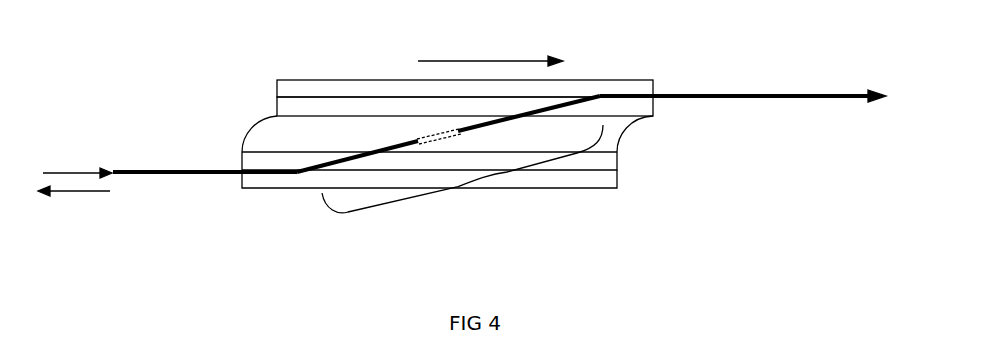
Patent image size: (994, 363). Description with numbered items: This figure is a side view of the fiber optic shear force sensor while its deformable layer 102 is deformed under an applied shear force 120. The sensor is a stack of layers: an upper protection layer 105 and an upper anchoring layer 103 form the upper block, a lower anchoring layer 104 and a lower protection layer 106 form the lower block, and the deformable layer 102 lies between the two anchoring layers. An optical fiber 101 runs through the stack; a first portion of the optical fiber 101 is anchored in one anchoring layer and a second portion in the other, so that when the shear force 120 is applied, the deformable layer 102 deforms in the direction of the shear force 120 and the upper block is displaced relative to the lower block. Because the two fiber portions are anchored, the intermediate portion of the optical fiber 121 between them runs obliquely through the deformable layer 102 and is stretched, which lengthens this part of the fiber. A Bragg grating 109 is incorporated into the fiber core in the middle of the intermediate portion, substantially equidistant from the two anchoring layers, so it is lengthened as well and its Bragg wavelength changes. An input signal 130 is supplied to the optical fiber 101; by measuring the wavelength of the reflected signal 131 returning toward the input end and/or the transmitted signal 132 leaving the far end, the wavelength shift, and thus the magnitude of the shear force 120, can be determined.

The optical fiber 101 is at (177, 173).
The deformable layer 102 is at (623, 137).
The upper anchoring layer 103 is at (276, 107).
The lower anchoring layer 104 is at (617, 163).
The upper protection layer 105 is at (276, 90).
The lower protection layer 106 is at (593, 190).
The Bragg grating 109 is at (430, 129).
The shear force 120 is at (490, 50).
The intermediate portion of the optical fiber 121 is at (466, 188).
The input signal 130 is at (77, 161).
The reflected signal 131 is at (74, 201).
The transmitted signal 132 is at (769, 108).